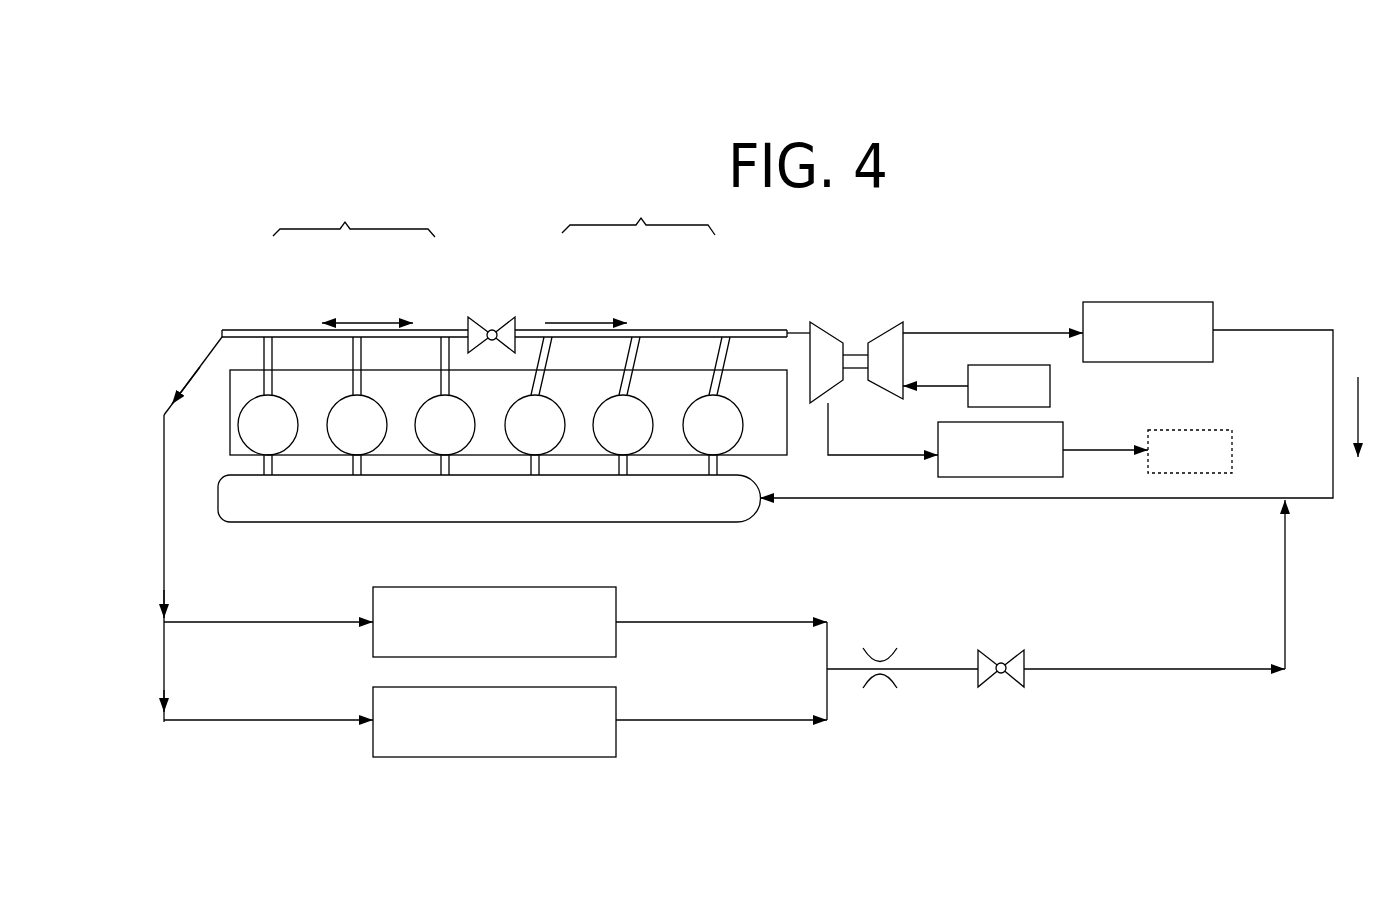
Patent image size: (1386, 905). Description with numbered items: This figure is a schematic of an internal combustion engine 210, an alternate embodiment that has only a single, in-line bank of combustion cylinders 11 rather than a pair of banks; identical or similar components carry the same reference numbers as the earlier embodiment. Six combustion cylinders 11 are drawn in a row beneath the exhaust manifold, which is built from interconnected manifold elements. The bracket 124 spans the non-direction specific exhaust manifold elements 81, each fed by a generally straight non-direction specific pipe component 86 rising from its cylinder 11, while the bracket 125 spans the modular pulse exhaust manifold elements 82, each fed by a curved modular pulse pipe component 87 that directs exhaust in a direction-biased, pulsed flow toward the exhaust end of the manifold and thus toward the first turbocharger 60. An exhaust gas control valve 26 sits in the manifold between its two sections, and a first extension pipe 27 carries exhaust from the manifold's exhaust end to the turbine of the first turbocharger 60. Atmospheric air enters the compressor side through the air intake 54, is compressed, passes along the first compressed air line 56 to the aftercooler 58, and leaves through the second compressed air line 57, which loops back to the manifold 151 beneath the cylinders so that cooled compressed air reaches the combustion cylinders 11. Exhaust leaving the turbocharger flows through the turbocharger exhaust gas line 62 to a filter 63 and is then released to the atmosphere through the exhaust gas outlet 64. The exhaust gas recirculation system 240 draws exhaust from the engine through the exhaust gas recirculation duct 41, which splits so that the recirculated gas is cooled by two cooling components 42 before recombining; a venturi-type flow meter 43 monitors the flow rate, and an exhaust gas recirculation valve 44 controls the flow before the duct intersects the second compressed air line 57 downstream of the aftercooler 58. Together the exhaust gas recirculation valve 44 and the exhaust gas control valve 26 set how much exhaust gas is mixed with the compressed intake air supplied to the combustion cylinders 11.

The internal combustion engine 210 is at (214, 290).
The first cylinder group 124 is at (354, 218).
The second cylinder group 125 is at (638, 217).
The non-direction specific exhaust manifold element 81 is at (438, 322).
The modular pulse exhaust manifold element 82 is at (725, 325).
The exhaust gas control valve 26 is at (491, 326).
The first extension pipe 27 is at (796, 332).
The first turbocharger 60 is at (829, 332).
The first compressed air line 56 is at (953, 332).
The aftercooler 58 is at (1148, 332).
The second compressed air line 57 is at (1273, 330).
The second air intake 54 is at (976, 386).
The turbocharger exhaust gas line 62 is at (852, 438).
The filter 63 is at (1043, 449).
The exhaust gas outlet 64 is at (1190, 451).
The exhaust gas recirculation passage 151 is at (727, 507).
The combustion cylinder 11 is at (490, 435).
The non-direction specific pipe component 86 is at (350, 357).
The modular pulse pipe component 87 is at (625, 358).
The exhaust gas recirculation duct 41 is at (163, 540).
The EGR system 240 is at (146, 667).
The cooling component 42 is at (494, 672).
The flow meter 43 is at (878, 682).
The exhaust gas recirculation valve 44 is at (988, 680).